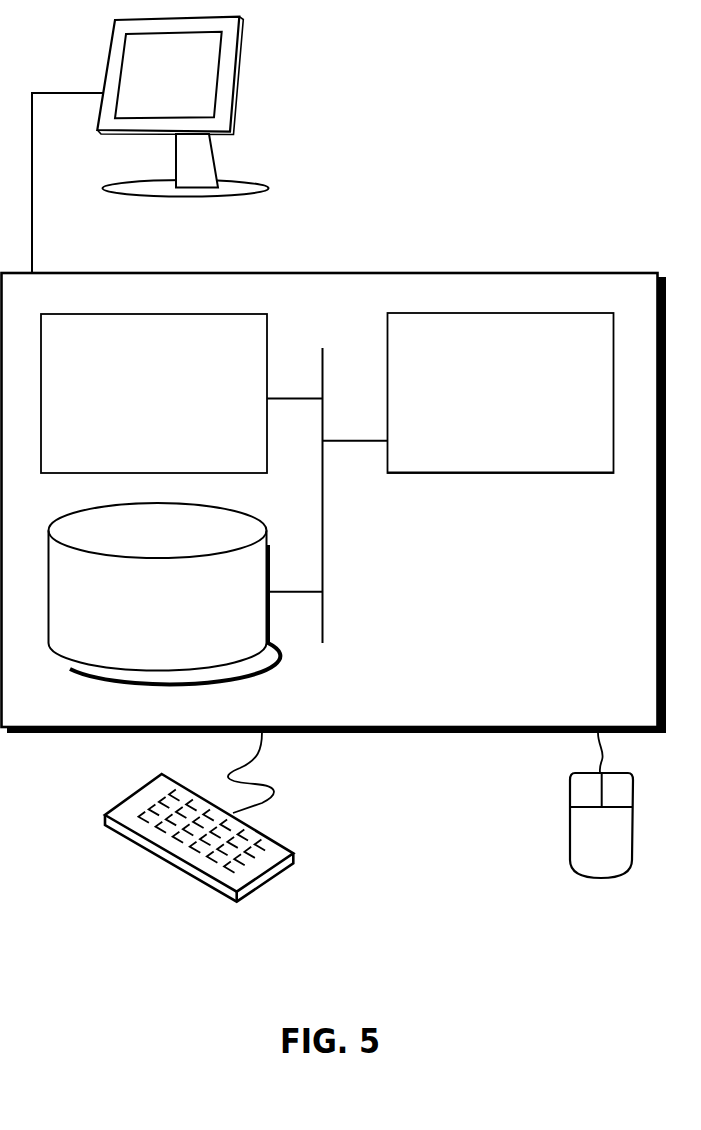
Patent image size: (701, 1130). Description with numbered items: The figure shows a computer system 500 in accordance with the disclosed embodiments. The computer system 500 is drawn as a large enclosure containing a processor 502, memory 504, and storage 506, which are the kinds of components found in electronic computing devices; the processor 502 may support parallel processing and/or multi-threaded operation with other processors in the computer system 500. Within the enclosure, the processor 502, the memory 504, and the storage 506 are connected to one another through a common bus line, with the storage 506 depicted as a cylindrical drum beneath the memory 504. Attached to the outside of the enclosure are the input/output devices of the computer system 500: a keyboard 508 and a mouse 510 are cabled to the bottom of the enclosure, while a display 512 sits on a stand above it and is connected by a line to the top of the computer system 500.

The computer system 500 is at (377, 250).
The processor 502 is at (483, 408).
The memory 504 is at (135, 407).
The storage 506 is at (140, 617).
The keyboard 508 is at (123, 837).
The mouse 510 is at (581, 847).
The display 512 is at (150, 145).